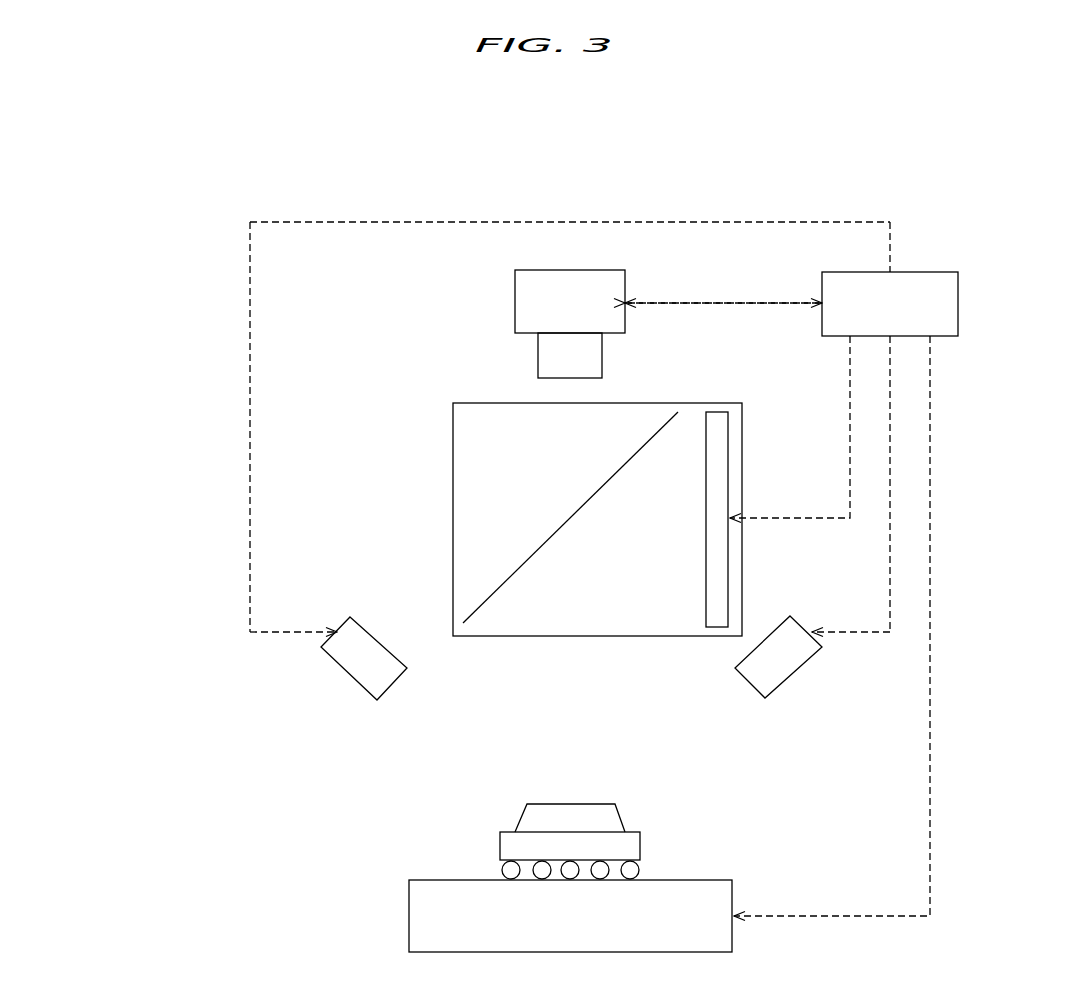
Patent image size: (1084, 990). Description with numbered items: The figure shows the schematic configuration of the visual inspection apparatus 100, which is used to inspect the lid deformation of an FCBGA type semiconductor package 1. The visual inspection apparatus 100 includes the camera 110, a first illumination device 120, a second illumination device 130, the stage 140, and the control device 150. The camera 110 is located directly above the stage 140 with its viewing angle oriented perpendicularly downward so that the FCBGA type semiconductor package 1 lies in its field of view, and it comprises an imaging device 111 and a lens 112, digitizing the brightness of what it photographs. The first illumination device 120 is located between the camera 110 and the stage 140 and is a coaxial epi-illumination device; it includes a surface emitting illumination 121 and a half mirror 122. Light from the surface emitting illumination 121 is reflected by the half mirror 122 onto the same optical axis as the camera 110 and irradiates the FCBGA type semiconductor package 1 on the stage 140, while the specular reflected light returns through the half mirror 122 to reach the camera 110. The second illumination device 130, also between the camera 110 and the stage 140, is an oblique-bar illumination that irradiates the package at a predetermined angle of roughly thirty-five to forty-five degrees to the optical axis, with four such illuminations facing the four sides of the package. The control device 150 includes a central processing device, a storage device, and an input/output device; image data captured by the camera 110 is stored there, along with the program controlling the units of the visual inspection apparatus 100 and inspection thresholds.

The visual inspection apparatus 100 is at (627, 171).
The camera 110 is at (405, 325).
The imaging device 111 is at (514, 305).
The lens 112 is at (537, 360).
The first illumination device 120 is at (440, 450).
The surface emitting illumination 121 is at (765, 441).
The half mirror 122 is at (502, 584).
The second illumination device 130 is at (337, 676).
The stage 140 is at (409, 915).
The control device 150 is at (821, 290).
The FCBGA type semiconductor package 1 is at (488, 847).